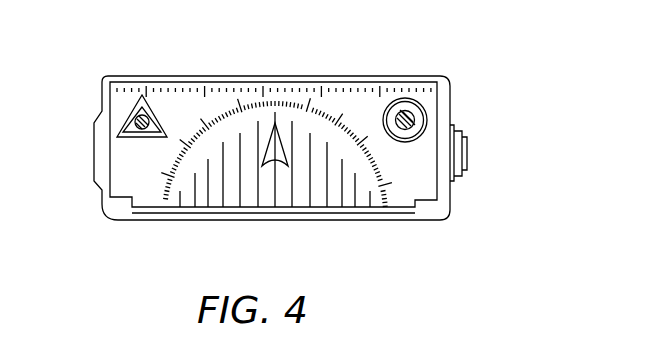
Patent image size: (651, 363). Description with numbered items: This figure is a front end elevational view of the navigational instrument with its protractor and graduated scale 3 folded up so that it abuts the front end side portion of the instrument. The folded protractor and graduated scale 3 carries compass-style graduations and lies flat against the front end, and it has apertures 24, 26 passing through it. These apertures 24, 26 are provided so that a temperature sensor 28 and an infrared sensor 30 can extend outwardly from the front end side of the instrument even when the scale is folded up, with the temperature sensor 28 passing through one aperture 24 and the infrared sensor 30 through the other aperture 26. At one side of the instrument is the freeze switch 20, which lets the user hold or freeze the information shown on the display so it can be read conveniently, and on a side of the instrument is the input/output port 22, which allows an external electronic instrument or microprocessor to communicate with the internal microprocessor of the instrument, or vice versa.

The protractor and graduated scale 3 is at (208, 180).
The freeze switch 20 is at (468, 153).
The input/output port 22 is at (93, 137).
The aperture 24 is at (412, 113).
The aperture 26 is at (137, 121).
The temperature sensor 28 is at (389, 104).
The infrared sensor 30 is at (148, 125).